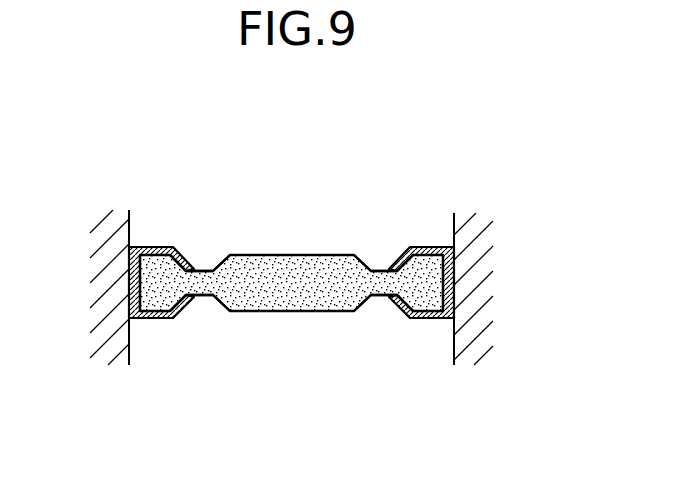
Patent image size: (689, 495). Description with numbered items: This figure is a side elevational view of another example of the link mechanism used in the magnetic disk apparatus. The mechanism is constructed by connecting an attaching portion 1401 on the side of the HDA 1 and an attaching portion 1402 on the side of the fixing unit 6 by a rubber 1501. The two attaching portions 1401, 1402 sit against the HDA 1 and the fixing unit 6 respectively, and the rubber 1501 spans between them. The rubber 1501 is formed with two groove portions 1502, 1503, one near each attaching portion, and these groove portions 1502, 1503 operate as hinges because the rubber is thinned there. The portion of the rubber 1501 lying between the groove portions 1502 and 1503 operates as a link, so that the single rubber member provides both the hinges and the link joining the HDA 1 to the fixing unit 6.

The HDA 1 is at (108, 295).
The fixing unit 6 is at (470, 285).
The attaching portion 1401 is at (130, 273).
The attaching portion 1402 is at (456, 270).
The rubber 1501 is at (300, 276).
The groove portion 1502 is at (197, 271).
The groove portion 1503 is at (381, 276).